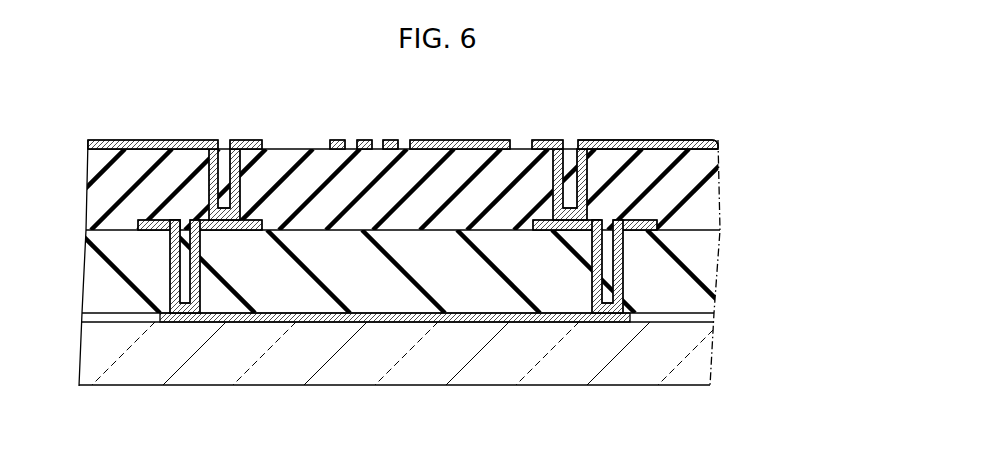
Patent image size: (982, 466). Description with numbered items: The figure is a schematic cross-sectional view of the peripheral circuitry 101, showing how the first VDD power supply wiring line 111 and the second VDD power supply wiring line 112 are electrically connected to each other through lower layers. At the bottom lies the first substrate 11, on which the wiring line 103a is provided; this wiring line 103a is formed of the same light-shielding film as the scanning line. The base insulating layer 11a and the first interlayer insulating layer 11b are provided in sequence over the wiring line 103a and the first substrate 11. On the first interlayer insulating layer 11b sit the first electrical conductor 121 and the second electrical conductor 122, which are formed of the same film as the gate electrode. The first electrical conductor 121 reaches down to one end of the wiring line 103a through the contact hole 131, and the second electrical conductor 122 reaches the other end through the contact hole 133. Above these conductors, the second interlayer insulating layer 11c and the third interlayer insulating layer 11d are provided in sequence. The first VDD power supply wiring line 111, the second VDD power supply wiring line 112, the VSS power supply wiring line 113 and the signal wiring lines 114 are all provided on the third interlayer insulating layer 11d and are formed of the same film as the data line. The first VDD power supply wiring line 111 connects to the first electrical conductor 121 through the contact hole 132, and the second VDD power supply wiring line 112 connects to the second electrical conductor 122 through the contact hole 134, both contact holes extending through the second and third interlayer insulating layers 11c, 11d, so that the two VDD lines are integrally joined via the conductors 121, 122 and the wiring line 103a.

The peripheral circuitry 101 is at (677, 88).
The first substrate 11 is at (710, 350).
The base insulating layer 11a is at (456, 271).
The first interlayer insulating layer 11b is at (703, 277).
The second interlayer insulating layer 11c is at (439, 189).
The third interlayer insulating layer 11d is at (710, 182).
The wiring line 103a is at (380, 323).
The first VDD power supply wiring line 111 is at (152, 140).
The second VDD power supply wiring line 112 is at (630, 140).
The VSS power supply wiring line 113 is at (462, 140).
The signal wiring lines 114 is at (390, 140).
The first electrical conductor 121 is at (268, 148).
The second electrical conductor 122 is at (541, 140).
The contact hole 131 is at (193, 270).
The contact hole 132 is at (222, 149).
The contact hole 133 is at (608, 273).
The contact hole 134 is at (573, 148).